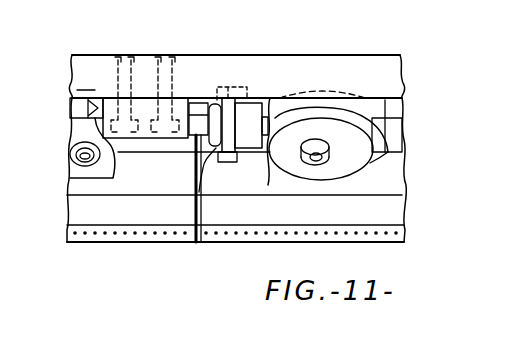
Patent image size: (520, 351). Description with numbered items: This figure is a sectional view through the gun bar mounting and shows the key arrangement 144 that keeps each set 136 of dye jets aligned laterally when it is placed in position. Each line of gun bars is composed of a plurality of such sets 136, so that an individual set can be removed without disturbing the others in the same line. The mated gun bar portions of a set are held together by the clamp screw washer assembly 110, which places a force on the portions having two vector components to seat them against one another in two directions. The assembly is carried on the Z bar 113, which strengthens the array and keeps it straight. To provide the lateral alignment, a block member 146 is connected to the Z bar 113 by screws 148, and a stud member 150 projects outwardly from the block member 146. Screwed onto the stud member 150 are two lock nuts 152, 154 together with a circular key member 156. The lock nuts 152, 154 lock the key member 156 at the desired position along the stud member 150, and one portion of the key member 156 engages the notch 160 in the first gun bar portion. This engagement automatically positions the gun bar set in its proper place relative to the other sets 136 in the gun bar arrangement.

The clamp screw washer assembly 110 is at (372, 153).
The Z bar 113 is at (343, 63).
The set of dye jets 136 is at (384, 182).
The key arrangement 144 is at (226, 170).
The block member 146 is at (142, 138).
The screws 148 is at (118, 53).
The stud member 150 is at (193, 98).
The lock nut 152 is at (200, 152).
The lock nut 154 is at (250, 163).
The circular key member 156 is at (240, 162).
The notch 160 is at (197, 193).